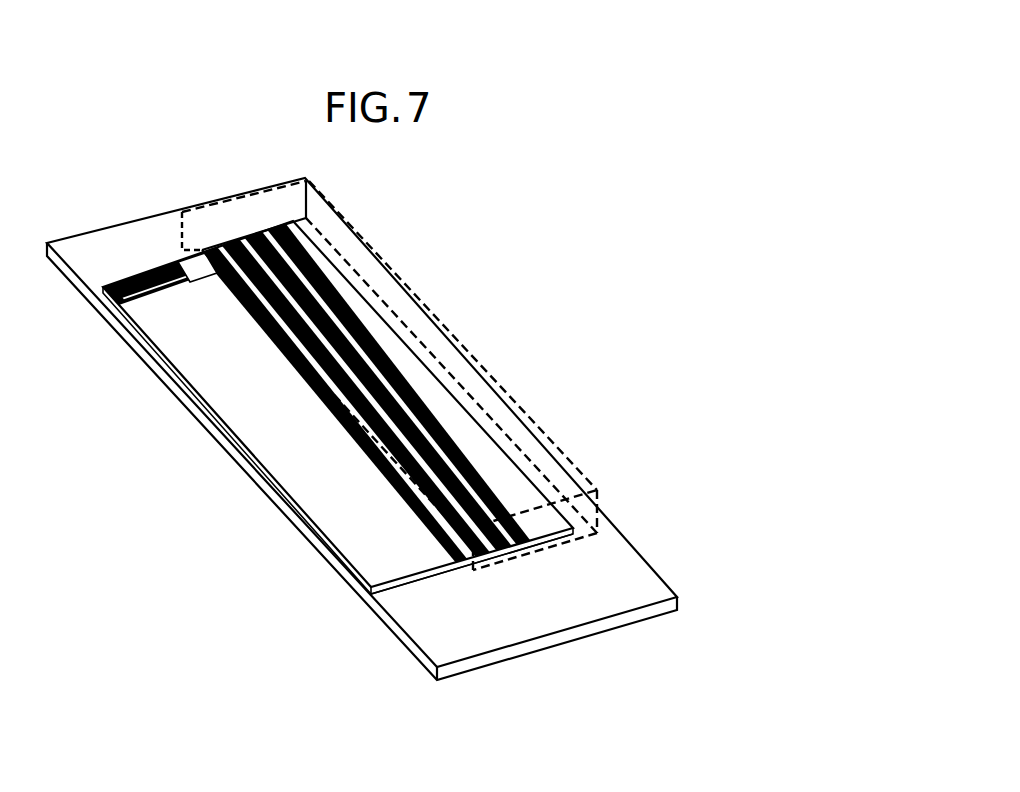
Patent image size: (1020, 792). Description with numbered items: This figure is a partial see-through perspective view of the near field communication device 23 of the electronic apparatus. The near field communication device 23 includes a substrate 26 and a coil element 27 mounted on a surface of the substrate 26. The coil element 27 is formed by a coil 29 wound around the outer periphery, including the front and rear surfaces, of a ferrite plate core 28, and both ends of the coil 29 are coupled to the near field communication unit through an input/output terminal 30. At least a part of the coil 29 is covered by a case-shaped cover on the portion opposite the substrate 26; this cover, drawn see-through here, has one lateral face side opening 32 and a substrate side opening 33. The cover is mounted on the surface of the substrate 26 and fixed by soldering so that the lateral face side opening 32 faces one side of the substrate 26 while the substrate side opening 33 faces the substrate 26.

The near field communication device 23 is at (537, 169).
The substrate 26 is at (557, 619).
The coil element 27 is at (359, 607).
The ferrite plate core 28 is at (437, 574).
The coil 29 is at (318, 400).
The input/output terminal 30 is at (247, 257).
The one lateral face side opening 32 is at (190, 234).
The substrate side opening 33 is at (588, 539).